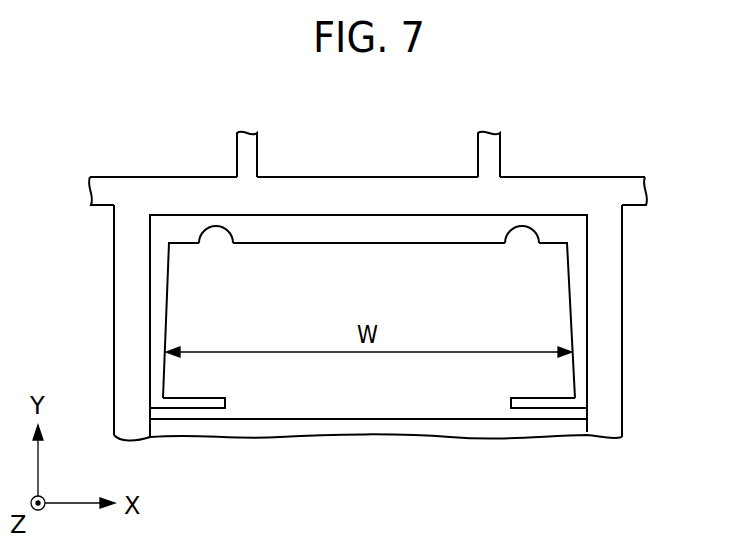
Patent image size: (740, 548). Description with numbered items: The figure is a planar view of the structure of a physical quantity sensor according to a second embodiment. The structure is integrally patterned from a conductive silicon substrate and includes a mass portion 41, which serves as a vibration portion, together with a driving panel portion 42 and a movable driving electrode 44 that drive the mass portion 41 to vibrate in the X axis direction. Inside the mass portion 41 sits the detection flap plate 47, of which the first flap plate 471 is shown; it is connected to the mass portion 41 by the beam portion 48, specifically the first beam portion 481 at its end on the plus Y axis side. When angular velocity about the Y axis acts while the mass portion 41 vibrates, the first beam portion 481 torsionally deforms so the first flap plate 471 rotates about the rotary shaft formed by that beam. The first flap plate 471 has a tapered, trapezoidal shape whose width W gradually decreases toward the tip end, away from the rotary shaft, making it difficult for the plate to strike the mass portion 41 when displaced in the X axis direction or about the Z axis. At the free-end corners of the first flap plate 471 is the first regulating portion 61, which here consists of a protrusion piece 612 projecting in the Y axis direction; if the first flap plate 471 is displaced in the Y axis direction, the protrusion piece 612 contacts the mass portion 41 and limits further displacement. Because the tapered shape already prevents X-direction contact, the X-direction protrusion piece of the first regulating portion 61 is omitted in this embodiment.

The mass portion 41 is at (607, 302).
The driving panel portion 42 is at (109, 190).
The movable driving electrode 44 is at (244, 147).
The detection flap plate 47 is at (369, 266).
The first flap plate 471 is at (376, 263).
The beam portion 48 is at (371, 450).
The first beam portion 481 is at (537, 411).
The first regulating portion 61 is at (405, 166).
The protrusion piece 612 is at (215, 238).